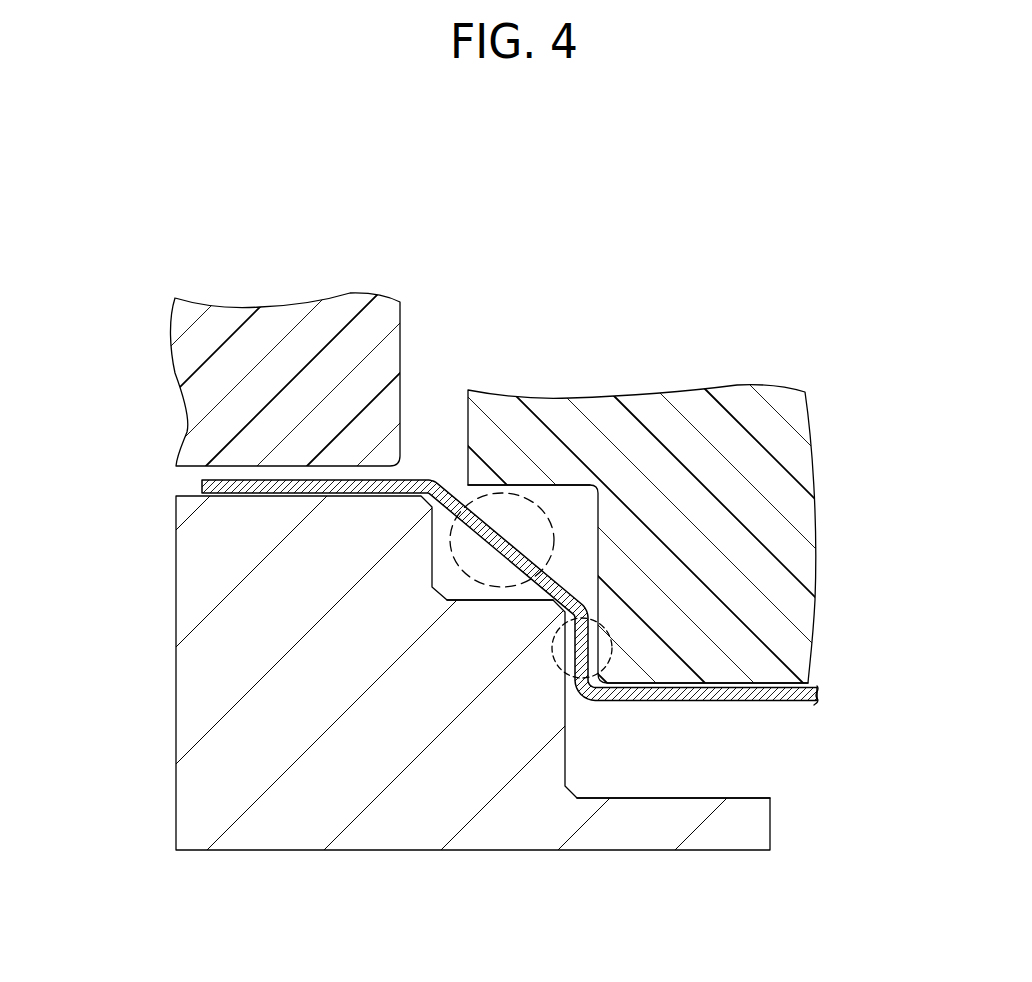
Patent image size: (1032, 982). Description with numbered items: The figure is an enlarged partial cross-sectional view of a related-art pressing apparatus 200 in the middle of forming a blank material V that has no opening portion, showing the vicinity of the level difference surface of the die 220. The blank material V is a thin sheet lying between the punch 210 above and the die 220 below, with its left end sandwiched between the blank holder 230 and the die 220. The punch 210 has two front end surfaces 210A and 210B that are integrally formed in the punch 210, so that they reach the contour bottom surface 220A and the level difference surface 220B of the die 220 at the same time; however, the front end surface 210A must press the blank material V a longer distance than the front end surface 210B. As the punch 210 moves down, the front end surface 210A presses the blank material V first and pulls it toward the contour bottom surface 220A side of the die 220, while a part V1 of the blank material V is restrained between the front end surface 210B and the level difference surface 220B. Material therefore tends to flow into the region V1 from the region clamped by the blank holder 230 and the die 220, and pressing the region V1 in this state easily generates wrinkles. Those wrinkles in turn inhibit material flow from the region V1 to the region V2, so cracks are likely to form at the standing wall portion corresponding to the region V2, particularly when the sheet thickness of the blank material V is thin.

The pressing apparatus 200 is at (166, 260).
The punch 210 is at (781, 397).
The front end surface 210A is at (772, 683).
The front end surface 210B is at (530, 485).
The die 220 is at (176, 797).
The contour bottom surface 220A is at (657, 798).
The level difference surface 220B is at (478, 600).
The blank holder 230 is at (175, 373).
The blank material V is at (732, 700).
The region of the blank material V1 is at (452, 530).
The region of the blank material V2 is at (557, 658).